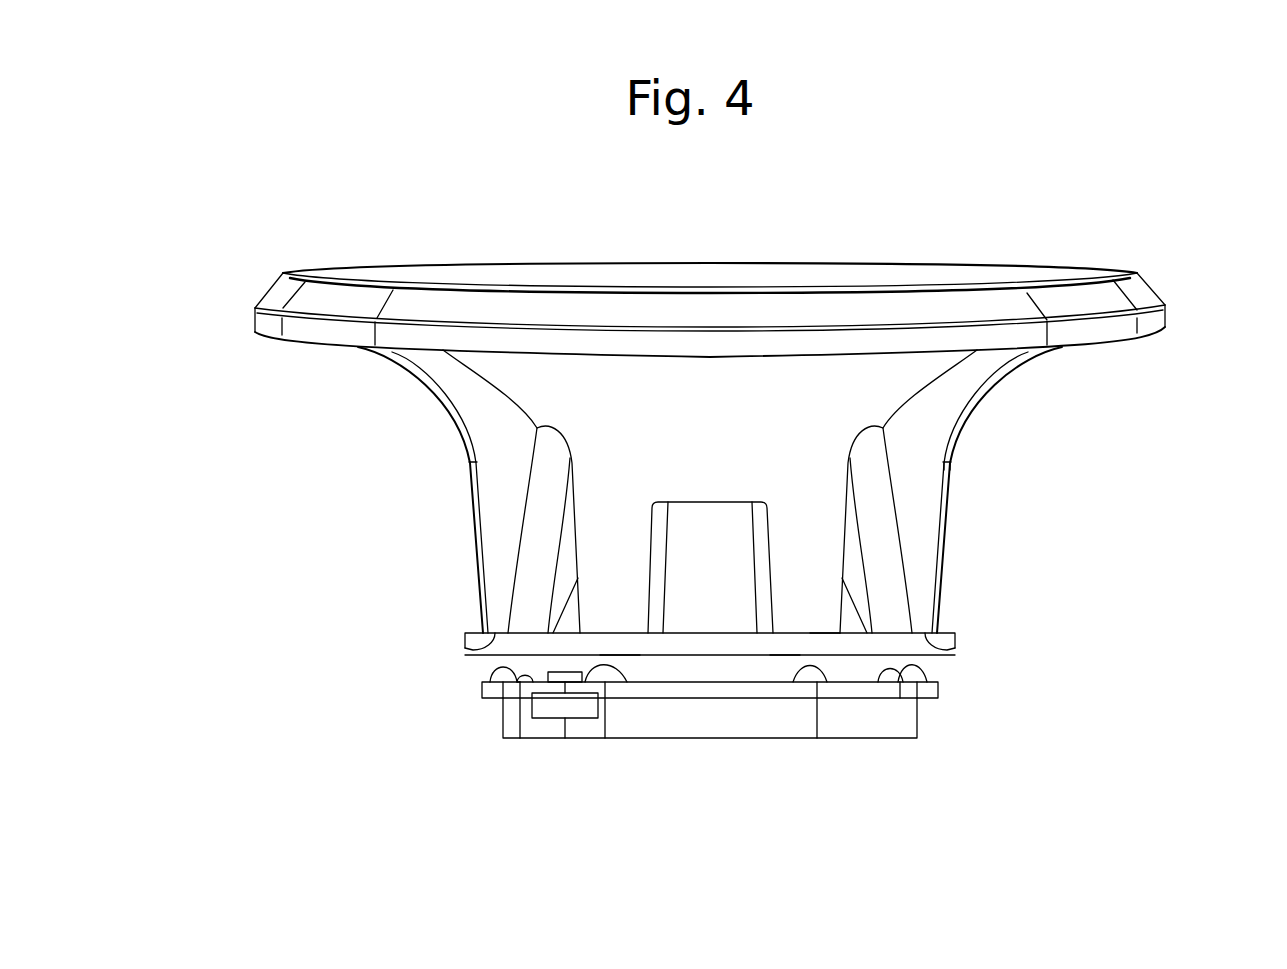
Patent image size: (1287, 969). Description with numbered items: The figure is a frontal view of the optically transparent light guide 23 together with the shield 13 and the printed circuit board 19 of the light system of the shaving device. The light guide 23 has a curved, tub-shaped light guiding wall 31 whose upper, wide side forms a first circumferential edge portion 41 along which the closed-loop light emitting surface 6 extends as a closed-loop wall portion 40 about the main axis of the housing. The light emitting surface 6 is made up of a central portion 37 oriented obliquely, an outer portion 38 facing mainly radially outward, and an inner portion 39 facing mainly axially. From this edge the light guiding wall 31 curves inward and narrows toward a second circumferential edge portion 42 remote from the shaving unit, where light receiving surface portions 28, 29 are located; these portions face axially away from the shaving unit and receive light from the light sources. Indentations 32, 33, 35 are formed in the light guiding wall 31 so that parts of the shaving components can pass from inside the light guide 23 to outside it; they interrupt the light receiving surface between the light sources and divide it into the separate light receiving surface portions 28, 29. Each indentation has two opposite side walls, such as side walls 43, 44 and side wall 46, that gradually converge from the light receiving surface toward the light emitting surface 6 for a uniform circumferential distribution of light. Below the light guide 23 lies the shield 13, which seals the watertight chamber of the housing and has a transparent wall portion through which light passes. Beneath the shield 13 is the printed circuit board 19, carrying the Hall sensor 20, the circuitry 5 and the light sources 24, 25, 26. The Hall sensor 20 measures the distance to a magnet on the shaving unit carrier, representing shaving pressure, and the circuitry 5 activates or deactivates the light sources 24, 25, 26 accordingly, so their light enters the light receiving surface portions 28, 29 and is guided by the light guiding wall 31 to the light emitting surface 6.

The light emitting surface 6 is at (246, 293).
The first circumferential edge portion 41 is at (280, 278).
The inner portion 39 is at (1137, 270).
The central portion 37 is at (1155, 285).
The outer portion 38 is at (1150, 325).
The closed-loop wall portion 40 is at (478, 402).
The light guiding wall 31 is at (928, 417).
The indentation 33 is at (565, 540).
The side wall 46 is at (537, 567).
The indentation 35 is at (850, 620).
The light guide 23 is at (965, 510).
The indentation 32 is at (710, 603).
The side wall 43 is at (660, 533).
The side wall 44 is at (763, 545).
The shield 13 is at (903, 645).
The light receiving surface portion 28 is at (495, 650).
The printed circuit board 19 is at (952, 690).
The circuitry 5 is at (550, 707).
The Hall sensor 20 is at (567, 675).
The light source 25 is at (500, 672).
The light source 24 is at (535, 680).
The light source 26 is at (602, 677).
The light receiving surface portion 29 is at (622, 638).
The second circumferential edge portion 42 is at (825, 633).